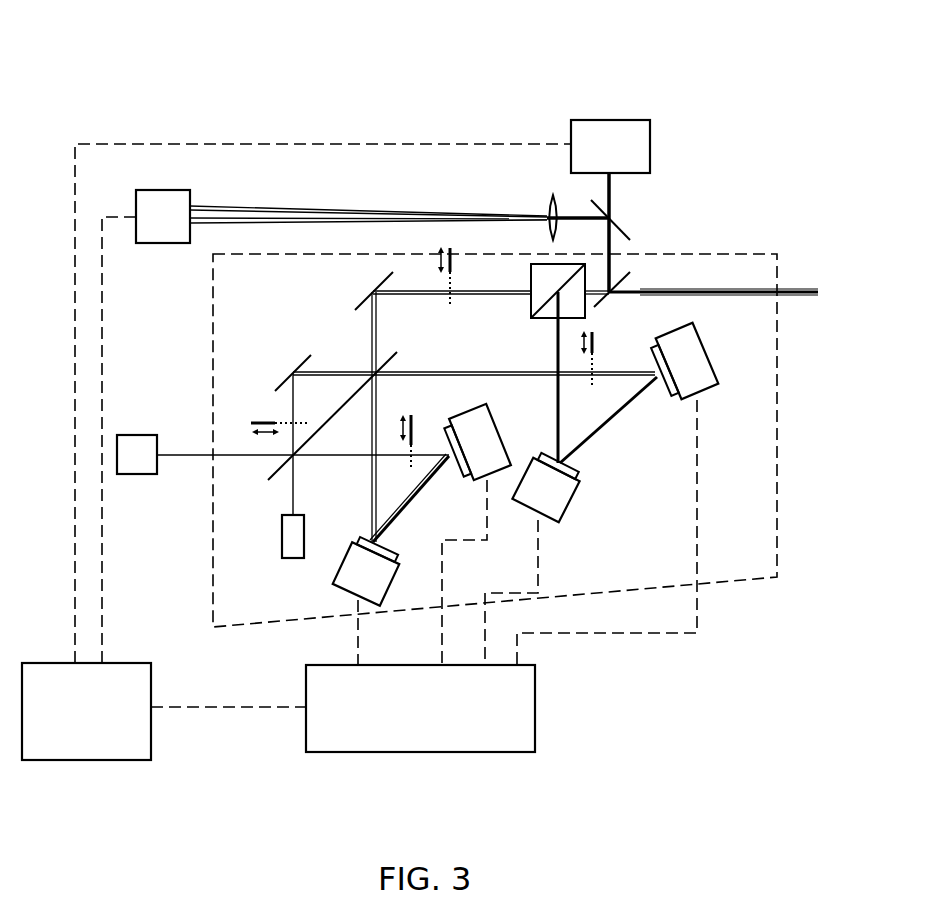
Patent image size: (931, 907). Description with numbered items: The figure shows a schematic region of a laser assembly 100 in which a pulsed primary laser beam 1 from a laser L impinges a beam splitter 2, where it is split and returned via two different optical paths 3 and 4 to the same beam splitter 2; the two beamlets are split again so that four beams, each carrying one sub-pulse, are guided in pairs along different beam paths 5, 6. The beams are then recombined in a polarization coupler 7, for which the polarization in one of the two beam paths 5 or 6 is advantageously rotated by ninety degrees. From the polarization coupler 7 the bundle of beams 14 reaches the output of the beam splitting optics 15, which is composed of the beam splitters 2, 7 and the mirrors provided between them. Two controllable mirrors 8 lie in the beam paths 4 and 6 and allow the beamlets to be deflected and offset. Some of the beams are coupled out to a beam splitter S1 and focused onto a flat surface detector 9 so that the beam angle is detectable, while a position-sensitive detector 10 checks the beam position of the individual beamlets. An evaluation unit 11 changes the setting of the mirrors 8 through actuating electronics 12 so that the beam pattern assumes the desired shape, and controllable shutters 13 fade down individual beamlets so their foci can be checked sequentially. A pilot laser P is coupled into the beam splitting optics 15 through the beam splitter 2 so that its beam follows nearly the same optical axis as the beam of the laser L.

The laser assembly 100 is at (64, 77).
The pulsed primary laser beam 1 is at (303, 439).
The beam splitter 2 is at (333, 415).
The optical path 3 is at (303, 431).
The optical path 4 is at (409, 498).
The beam path 5 is at (474, 404).
The beam path 6 is at (608, 420).
The polarization coupler 7 is at (561, 361).
The controllable mirror 8 is at (486, 454).
The flat surface detector 9 is at (169, 228).
The position-sensitive detector 10 is at (623, 158).
The evaluation unit 11 is at (99, 722).
The actuating electronics 12 is at (433, 720).
The controllable shutter 13 is at (423, 354).
The bundle of beams 14 is at (713, 280).
The beam splitting optics 15 is at (730, 583).
The laser L is at (132, 434).
The pilot laser P is at (282, 540).
The beam splitter S1 is at (600, 307).